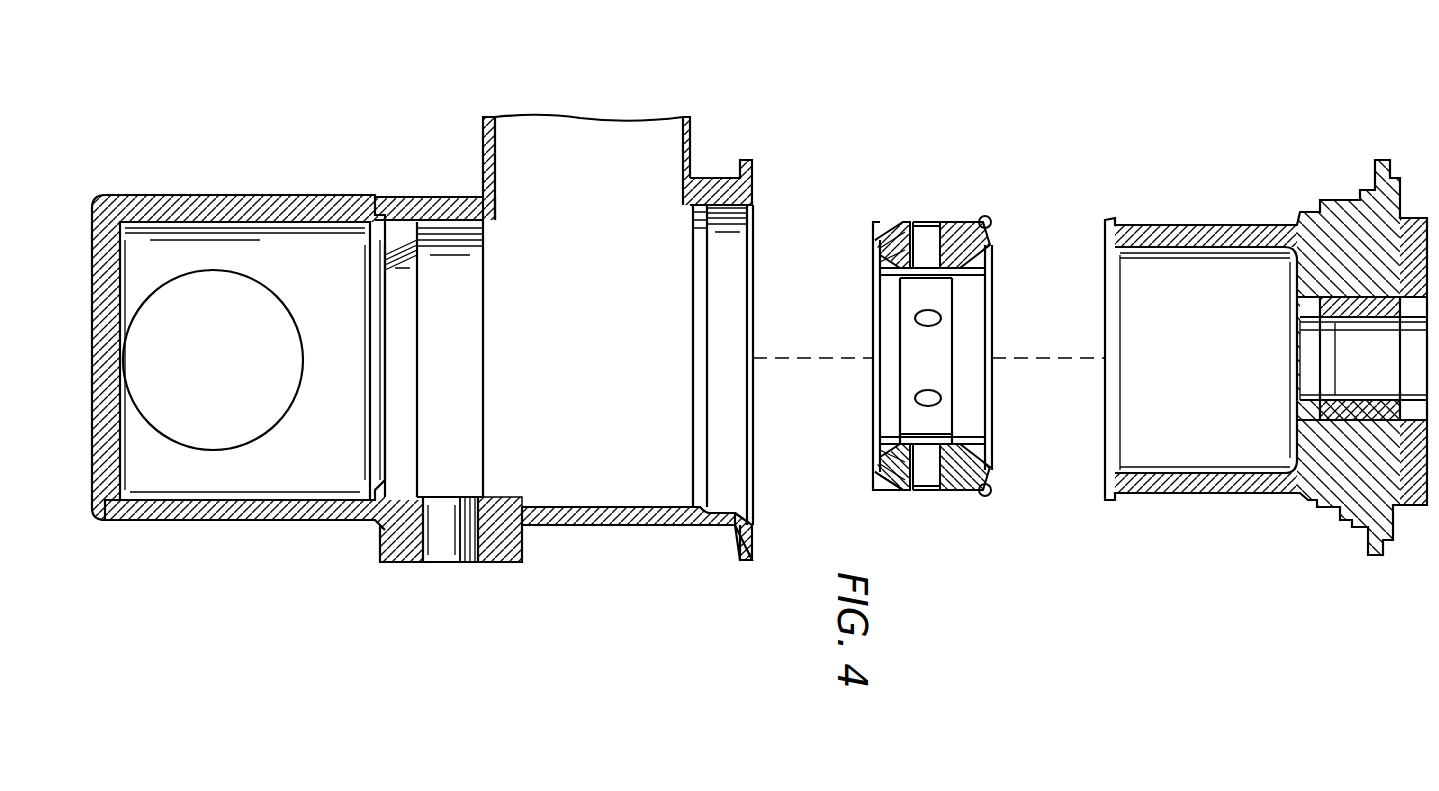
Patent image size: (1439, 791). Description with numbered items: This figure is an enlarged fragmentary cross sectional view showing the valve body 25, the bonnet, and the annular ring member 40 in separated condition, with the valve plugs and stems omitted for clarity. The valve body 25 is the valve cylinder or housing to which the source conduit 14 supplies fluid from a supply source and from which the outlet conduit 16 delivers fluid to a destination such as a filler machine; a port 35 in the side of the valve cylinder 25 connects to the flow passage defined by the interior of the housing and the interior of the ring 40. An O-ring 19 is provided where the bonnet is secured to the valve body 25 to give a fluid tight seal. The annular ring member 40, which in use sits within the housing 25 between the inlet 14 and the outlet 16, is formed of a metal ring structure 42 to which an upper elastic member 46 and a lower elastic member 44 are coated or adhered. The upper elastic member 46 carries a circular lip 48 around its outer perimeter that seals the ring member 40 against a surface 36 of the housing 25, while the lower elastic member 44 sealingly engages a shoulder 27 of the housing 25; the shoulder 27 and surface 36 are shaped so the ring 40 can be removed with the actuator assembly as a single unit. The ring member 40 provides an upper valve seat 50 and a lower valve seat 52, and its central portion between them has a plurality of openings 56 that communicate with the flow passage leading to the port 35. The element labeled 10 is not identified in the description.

The valve body 10 is at (1306, 488).
The source conduit 14 is at (587, 126).
The outlet conduit 16 is at (243, 443).
The O-ring 19 is at (698, 428).
The valve body 25 is at (564, 367).
The shoulder 27 is at (366, 535).
The port 35 is at (450, 540).
The surface 36 is at (488, 545).
The annular ring member 40 is at (937, 368).
The metal ring structure 42 is at (965, 225).
The lower elastic member 44 is at (889, 490).
The upper elastic member 46 is at (990, 232).
The circular lip 48 is at (985, 495).
The upper valve seat 50 is at (990, 316).
The lower valve seat 52 is at (885, 390).
The openings 56 is at (932, 320).